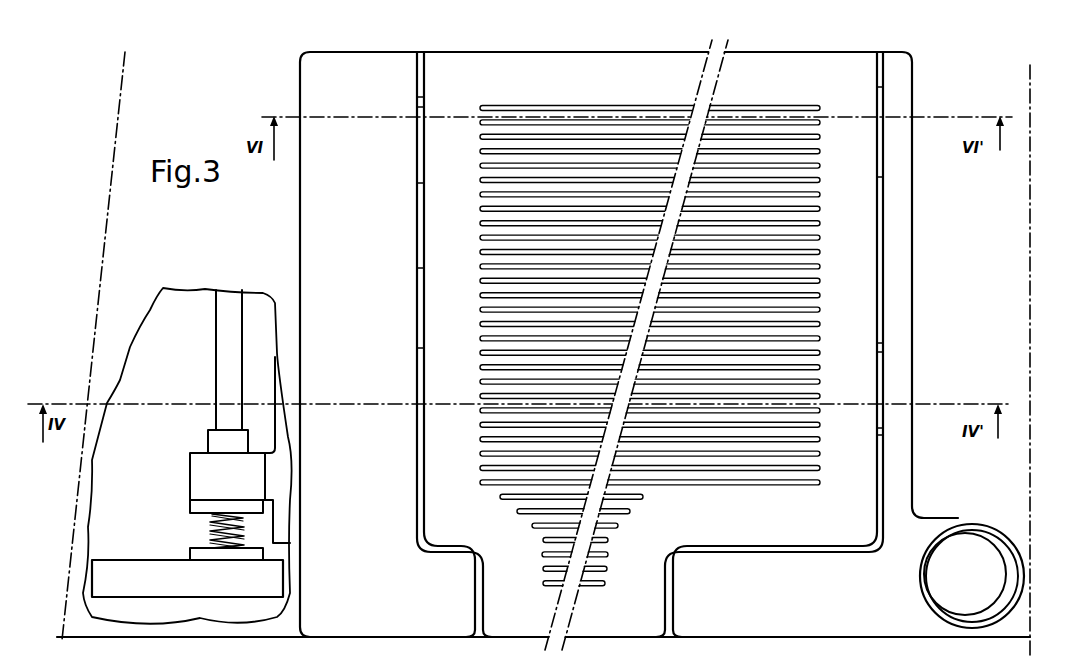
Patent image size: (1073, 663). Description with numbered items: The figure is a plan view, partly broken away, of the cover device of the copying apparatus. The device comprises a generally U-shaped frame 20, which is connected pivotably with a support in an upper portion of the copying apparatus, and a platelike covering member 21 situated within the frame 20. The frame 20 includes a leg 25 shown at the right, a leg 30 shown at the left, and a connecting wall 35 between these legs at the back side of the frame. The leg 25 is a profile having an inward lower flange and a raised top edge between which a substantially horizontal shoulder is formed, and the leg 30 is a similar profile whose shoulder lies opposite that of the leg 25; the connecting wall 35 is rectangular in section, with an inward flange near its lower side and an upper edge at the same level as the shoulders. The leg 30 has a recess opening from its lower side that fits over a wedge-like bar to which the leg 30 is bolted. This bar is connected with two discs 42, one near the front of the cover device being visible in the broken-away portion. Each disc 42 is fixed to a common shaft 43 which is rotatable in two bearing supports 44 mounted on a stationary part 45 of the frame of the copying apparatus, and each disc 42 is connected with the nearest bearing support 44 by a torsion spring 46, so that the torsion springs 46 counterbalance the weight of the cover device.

The U-shaped frame 20 is at (294, 240).
The covering member 21 is at (462, 261).
The leg 25 is at (908, 339).
The leg 30 is at (357, 344).
The connecting wall 35 is at (421, 52).
The disc 42 is at (202, 592).
The shaft 43 is at (216, 349).
The bearing support 44 is at (212, 475).
The stationary part 45 is at (277, 480).
The torsion spring 46 is at (208, 525).